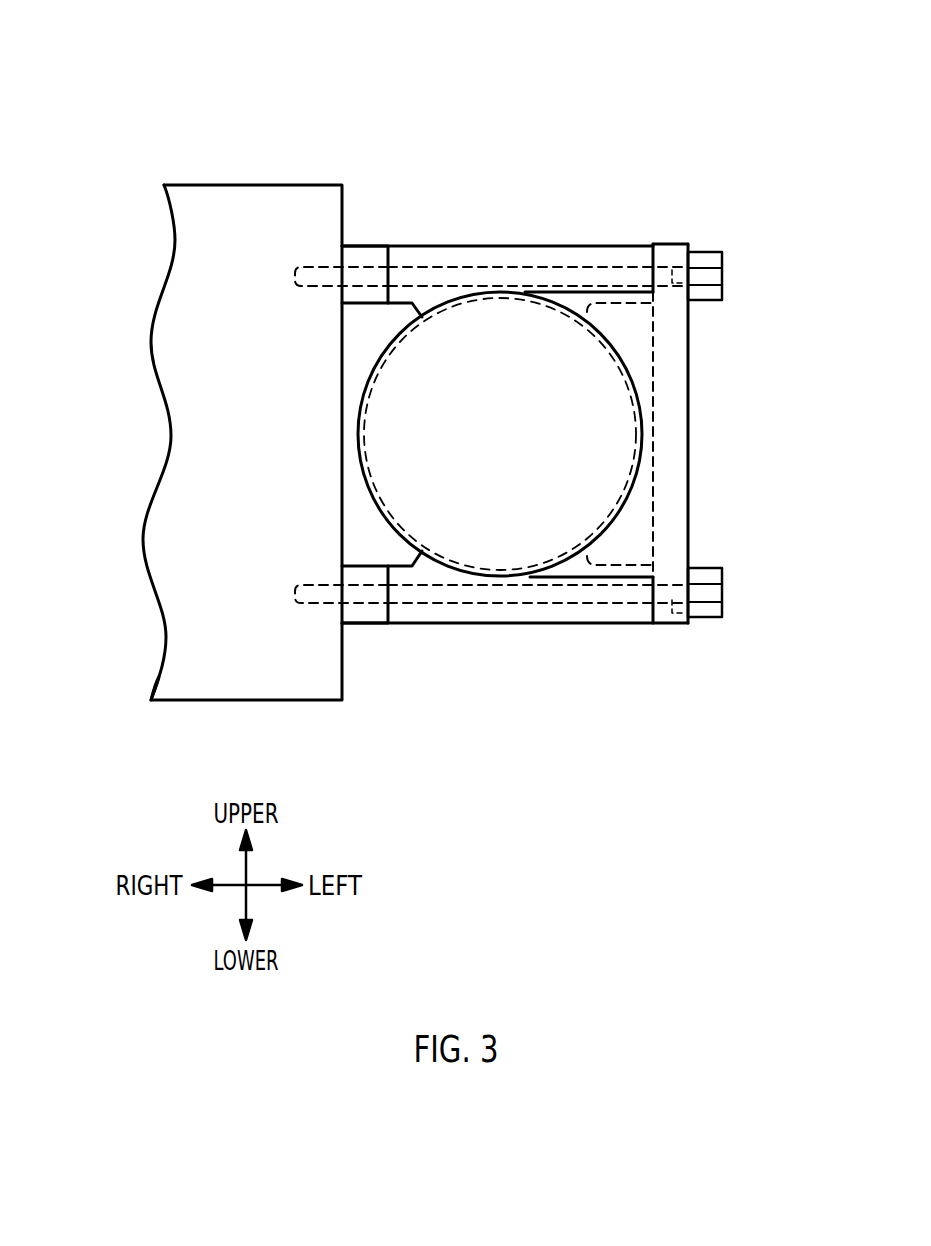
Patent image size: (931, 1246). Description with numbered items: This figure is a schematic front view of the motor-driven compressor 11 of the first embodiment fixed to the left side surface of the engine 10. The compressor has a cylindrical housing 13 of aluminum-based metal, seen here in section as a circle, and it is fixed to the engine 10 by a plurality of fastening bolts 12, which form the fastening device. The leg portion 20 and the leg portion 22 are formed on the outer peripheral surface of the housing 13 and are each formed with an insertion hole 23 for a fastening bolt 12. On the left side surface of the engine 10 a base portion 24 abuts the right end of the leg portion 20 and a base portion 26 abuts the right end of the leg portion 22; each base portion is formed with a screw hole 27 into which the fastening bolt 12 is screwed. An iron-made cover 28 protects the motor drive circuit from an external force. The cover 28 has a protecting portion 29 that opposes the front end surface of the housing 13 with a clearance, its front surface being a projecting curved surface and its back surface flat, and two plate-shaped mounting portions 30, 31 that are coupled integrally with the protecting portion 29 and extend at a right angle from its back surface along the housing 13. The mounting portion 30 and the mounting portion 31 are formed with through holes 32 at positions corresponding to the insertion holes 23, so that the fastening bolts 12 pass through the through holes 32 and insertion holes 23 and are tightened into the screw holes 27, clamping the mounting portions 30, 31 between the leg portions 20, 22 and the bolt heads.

The engine 10 is at (252, 185).
The motor-driven compressor 11 is at (653, 133).
The fastening bolt 12 is at (706, 252).
The housing 13 is at (362, 478).
The leg portion 20 is at (545, 246).
The leg portion 22 is at (463, 625).
The insertion hole 23 is at (455, 262).
The base portion 24 is at (366, 246).
The base portion 26 is at (367, 625).
The screw hole 27 is at (340, 268).
The cover 28 is at (691, 448).
The protecting portion 29 is at (405, 436).
The mounting portion 30 is at (672, 244).
The mounting portion 31 is at (672, 625).
The through hole 32 is at (675, 285).